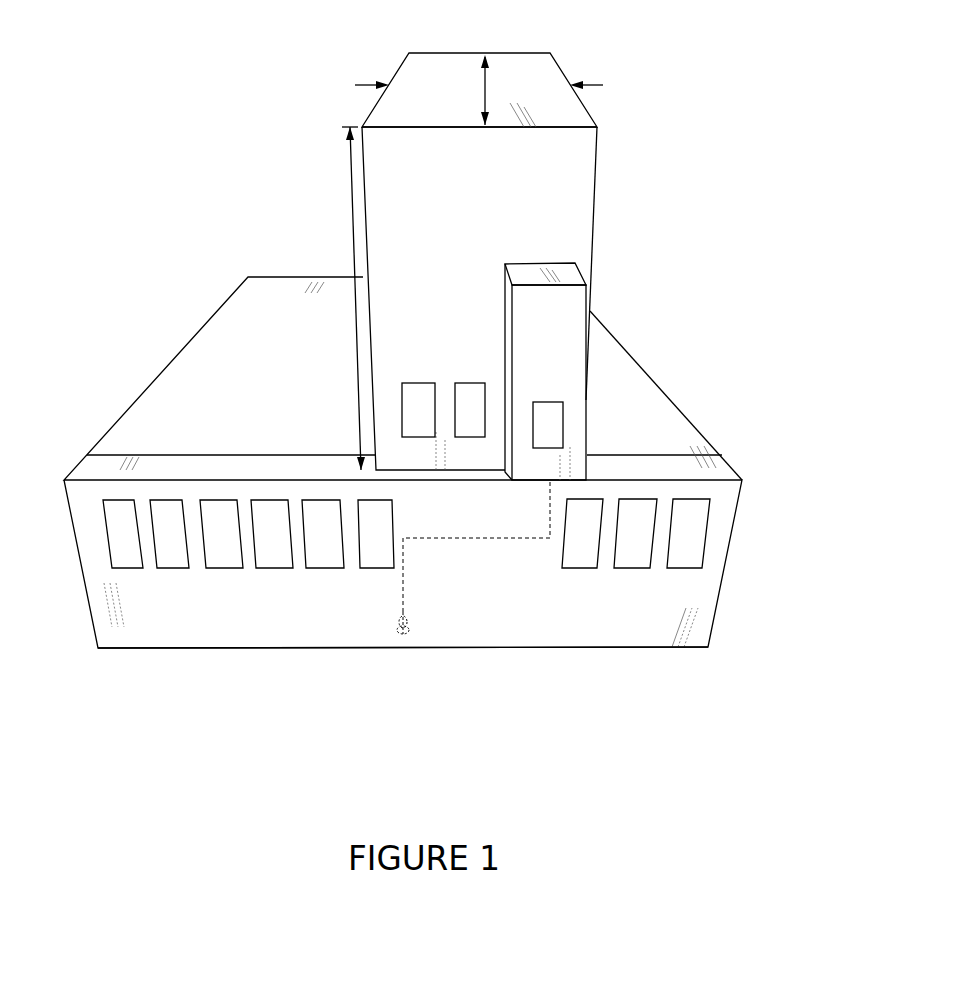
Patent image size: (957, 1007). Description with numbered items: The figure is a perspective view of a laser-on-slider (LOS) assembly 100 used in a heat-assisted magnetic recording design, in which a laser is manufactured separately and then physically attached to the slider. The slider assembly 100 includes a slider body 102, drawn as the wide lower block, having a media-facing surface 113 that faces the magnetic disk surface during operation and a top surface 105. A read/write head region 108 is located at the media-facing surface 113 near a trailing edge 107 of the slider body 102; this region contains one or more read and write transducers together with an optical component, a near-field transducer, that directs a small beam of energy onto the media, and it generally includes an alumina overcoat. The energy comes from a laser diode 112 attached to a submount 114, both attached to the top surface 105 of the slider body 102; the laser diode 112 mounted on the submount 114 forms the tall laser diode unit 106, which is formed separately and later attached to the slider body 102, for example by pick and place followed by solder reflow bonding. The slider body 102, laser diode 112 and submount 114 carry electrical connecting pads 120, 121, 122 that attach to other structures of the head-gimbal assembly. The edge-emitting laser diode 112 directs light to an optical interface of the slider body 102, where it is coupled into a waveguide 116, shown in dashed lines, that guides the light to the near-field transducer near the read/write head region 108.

The LOS assembly 100 is at (755, 160).
The slider body 102 is at (182, 318).
The top surface 105 is at (680, 442).
The laser diode unit 106 is at (318, 137).
The trailing edge 107 is at (200, 650).
The read/write head region 108 is at (403, 640).
The laser diode 112 is at (577, 280).
The media-facing surface 113 is at (655, 648).
The submount 114 is at (537, 55).
The waveguide 116 is at (457, 539).
The electrical connecting pads 120 is at (173, 560).
The electrical connecting pad 121 is at (558, 418).
The electrical connecting pads 122 is at (463, 383).